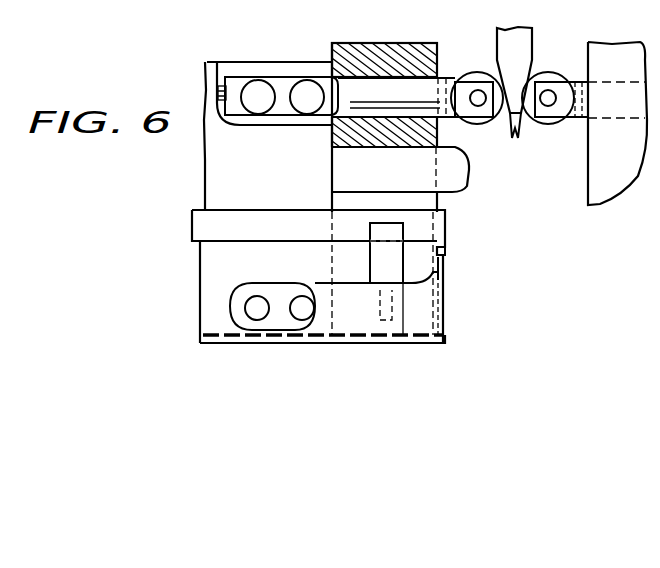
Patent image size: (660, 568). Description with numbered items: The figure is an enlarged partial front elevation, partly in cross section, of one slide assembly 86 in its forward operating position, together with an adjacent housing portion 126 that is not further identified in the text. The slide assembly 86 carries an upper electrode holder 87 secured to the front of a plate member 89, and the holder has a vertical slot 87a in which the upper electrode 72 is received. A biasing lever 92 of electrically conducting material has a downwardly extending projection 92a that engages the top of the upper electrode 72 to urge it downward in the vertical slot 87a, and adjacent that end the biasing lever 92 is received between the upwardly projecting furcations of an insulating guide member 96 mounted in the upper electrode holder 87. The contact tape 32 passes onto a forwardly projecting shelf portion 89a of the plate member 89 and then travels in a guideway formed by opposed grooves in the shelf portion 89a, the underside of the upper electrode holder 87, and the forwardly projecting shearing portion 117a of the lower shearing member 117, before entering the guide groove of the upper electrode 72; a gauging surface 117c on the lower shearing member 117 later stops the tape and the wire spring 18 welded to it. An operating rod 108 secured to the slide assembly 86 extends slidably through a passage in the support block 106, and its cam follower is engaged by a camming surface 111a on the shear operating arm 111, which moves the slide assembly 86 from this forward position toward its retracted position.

The support block 106 is at (407, 60).
The operating rod 108 is at (472, 87).
The shear operating arm 111 is at (521, 38).
The camming surface 111a is at (524, 138).
The lower shearing member 117 is at (422, 202).
The bearing housing 126 is at (353, 163).
The slide assembly 86 is at (202, 163).
The biasing lever 92 is at (217, 220).
The downwardly extending projection 92a is at (442, 248).
The guide member 96 is at (382, 262).
The upper electrode 72 is at (443, 262).
The upper electrode holder 87 is at (422, 308).
The vertical slot 87a is at (443, 290).
The plate member 89 is at (213, 276).
The shelf portion 89a is at (233, 345).
The contact tape 32 is at (203, 332).
The wire spring 18 is at (445, 338).
The shearing portion 117a is at (365, 345).
The gauging surface 117c is at (443, 343).